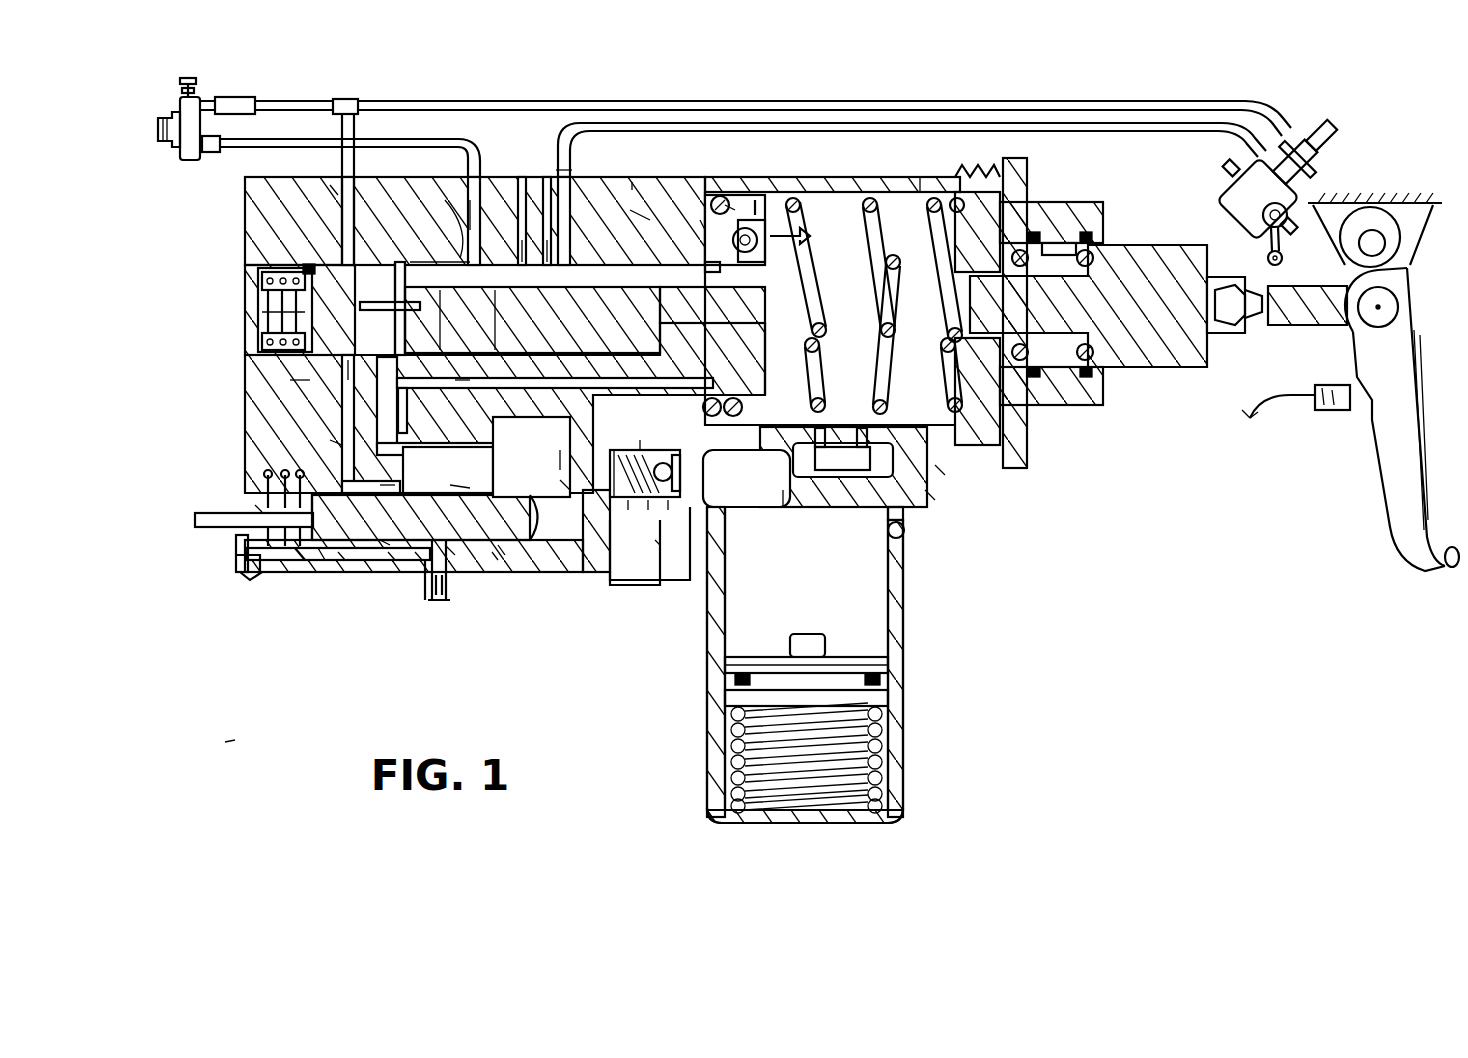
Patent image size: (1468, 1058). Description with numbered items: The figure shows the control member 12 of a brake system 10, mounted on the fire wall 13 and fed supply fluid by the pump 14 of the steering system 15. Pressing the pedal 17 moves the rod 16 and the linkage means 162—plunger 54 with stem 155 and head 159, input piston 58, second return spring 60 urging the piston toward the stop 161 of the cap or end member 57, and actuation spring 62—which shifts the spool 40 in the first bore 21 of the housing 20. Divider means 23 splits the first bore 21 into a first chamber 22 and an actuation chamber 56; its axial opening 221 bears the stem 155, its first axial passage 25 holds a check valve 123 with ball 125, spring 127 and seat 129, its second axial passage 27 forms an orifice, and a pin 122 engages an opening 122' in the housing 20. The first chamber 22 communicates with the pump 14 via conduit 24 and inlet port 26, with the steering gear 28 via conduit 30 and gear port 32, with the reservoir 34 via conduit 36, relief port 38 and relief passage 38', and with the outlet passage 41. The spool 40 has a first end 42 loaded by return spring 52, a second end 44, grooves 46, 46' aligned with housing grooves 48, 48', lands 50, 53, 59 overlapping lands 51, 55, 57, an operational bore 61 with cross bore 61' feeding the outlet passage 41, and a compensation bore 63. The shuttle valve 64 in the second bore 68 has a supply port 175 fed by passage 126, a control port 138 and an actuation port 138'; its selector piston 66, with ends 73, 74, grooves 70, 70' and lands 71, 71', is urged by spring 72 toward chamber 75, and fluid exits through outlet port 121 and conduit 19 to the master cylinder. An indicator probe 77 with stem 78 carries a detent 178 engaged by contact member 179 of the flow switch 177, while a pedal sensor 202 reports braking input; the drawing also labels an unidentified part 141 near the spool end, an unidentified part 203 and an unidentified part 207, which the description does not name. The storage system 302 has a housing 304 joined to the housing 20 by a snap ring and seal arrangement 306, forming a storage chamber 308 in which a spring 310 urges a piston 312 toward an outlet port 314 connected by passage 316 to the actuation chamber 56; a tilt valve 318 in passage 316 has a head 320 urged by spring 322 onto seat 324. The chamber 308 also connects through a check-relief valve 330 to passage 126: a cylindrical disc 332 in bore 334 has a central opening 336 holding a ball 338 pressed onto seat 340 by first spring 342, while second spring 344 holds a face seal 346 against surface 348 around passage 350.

The brake system 10 is at (216, 747).
The control member 12 is at (1058, 194).
The fire wall 13 is at (1027, 455).
The pump 14 is at (180, 150).
The steering system 15 is at (1296, 96).
The rod 16 is at (1400, 310).
The pedal 17 is at (1410, 400).
The conduit 19 is at (445, 600).
The housing 20 is at (930, 180).
The first bore 21 is at (640, 215).
The first chamber 22 is at (635, 185).
The divider means 23 is at (800, 235).
The conduit 24 is at (390, 143).
The first axial passage 25 is at (725, 200).
The inlet port 26 is at (480, 141).
The second axial passage 27 is at (735, 395).
The steering gear 28 is at (1240, 185).
The conduit 30 is at (1160, 128).
The gear port 32 is at (565, 170).
The reservoir 34 is at (180, 103).
The conduit 36 is at (333, 108).
The relief port 38 is at (364, 207).
The relief passage 38' is at (300, 171).
The spool 40 is at (305, 268).
The outlet passage 41 is at (505, 455).
The first end 42 is at (270, 355).
The second end 44 is at (758, 365).
The first groove 46 is at (513, 320).
The second groove 46' is at (460, 320).
The groove 48 is at (516, 173).
The groove 48' is at (450, 190).
The first land 50 is at (545, 340).
The first land 51 is at (520, 200).
The return spring 52 is at (262, 345).
The second land 53 is at (455, 255).
The plunger 54 is at (810, 300).
The second land 55 is at (455, 380).
The actuation chamber 56 is at (902, 299).
The cap or end member 57 is at (1100, 210).
The input piston 58 is at (1090, 400).
The third land 59 is at (352, 370).
The second return spring 60 is at (880, 185).
The operational bore 61 is at (247, 308).
The cross bore 61' is at (245, 320).
The actuation spring 62 is at (1100, 245).
The compensation bore 63 is at (547, 200).
The shuttle valve 64 is at (370, 555).
The selector piston 66 is at (340, 558).
The second bore 68 is at (390, 558).
The first groove 70 is at (461, 572).
The second groove 70' is at (405, 526).
The land 71 is at (305, 583).
The land 71' is at (408, 583).
The spring 72 is at (265, 480).
The first end 73 is at (300, 548).
The second end 74 is at (500, 555).
The chamber 75 is at (559, 516).
The indicator probe 77 is at (198, 518).
The stem 78 is at (255, 510).
The outlet port 121 is at (425, 570).
The tab or pin 122 is at (679, 203).
The opening 122' is at (671, 209).
The check valve 123 is at (762, 203).
The ball 125 is at (725, 245).
The passage 126 is at (570, 450).
The spring 127 is at (735, 215).
The seat 129 is at (820, 270).
The control port 138 is at (437, 470).
The actuation port 138' is at (369, 468).
The seal 141 is at (262, 280).
The stem 155 is at (655, 305).
The head 159 is at (815, 337).
The stop 161 is at (1015, 175).
The linkage means 162 is at (822, 200).
The supply port 175 is at (565, 480).
The flow switch 177 is at (231, 566).
The detent 178 is at (262, 500).
The contact member 179 is at (235, 540).
The pedal sensor 202 is at (1338, 412).
The spring 203 is at (1262, 420).
The link 207 is at (240, 570).
The axial opening 221 is at (775, 385).
The storage system 302 is at (985, 723).
The housing 304 is at (900, 663).
The snap ring and seal arrangement 306 is at (905, 550).
The storage chamber 308 is at (789, 591).
The spring 310 is at (790, 800).
The piston 312 is at (900, 693).
The outlet port 314 is at (850, 477).
The passage 316 is at (820, 350).
The tilt valve 318 is at (940, 470).
The head 320 is at (905, 525).
The spring 322 is at (930, 495).
The seat 324 is at (783, 507).
The check-relief valve 330 is at (660, 548).
The cylindrical disc 332 is at (700, 455).
The bore 334 is at (640, 440).
The central opening 336 is at (625, 455).
The ball 338 is at (650, 500).
The seat 340 is at (628, 500).
The first spring 342 is at (668, 500).
The second spring 344 is at (590, 545).
The face seal 346 is at (700, 470).
The surface 348 is at (700, 495).
The passage 350 is at (720, 480).